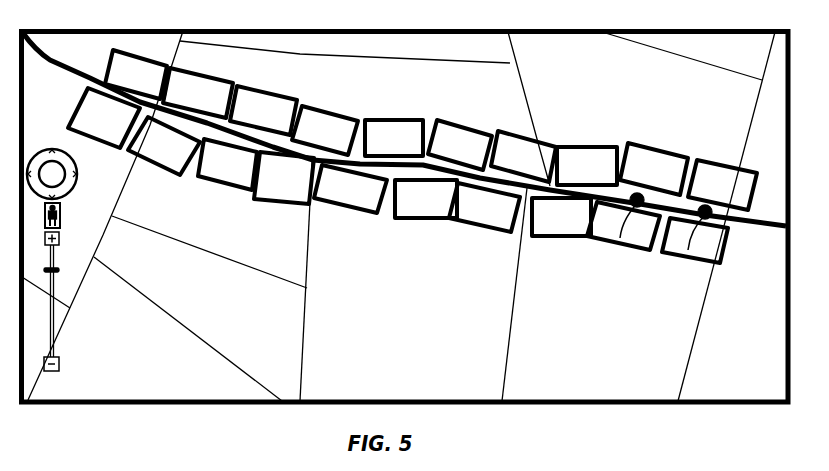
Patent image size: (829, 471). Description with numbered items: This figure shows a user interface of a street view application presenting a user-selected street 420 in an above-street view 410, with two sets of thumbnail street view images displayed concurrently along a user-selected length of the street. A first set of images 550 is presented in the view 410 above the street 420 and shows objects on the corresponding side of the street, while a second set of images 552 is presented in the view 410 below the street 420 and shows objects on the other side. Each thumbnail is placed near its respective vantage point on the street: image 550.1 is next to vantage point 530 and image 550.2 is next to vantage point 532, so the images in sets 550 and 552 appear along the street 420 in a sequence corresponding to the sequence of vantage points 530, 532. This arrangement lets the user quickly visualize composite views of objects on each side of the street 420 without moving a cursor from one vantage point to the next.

The view 410 is at (194, 366).
The street 420 is at (757, 228).
The vantage point 530 is at (688, 250).
The vantage point 532 is at (620, 238).
The set of thumbnail street view images 550 is at (770, 190).
The image 550.1 is at (740, 194).
The image 550.2 is at (670, 178).
The set of thumbnail street view images 552 is at (720, 300).